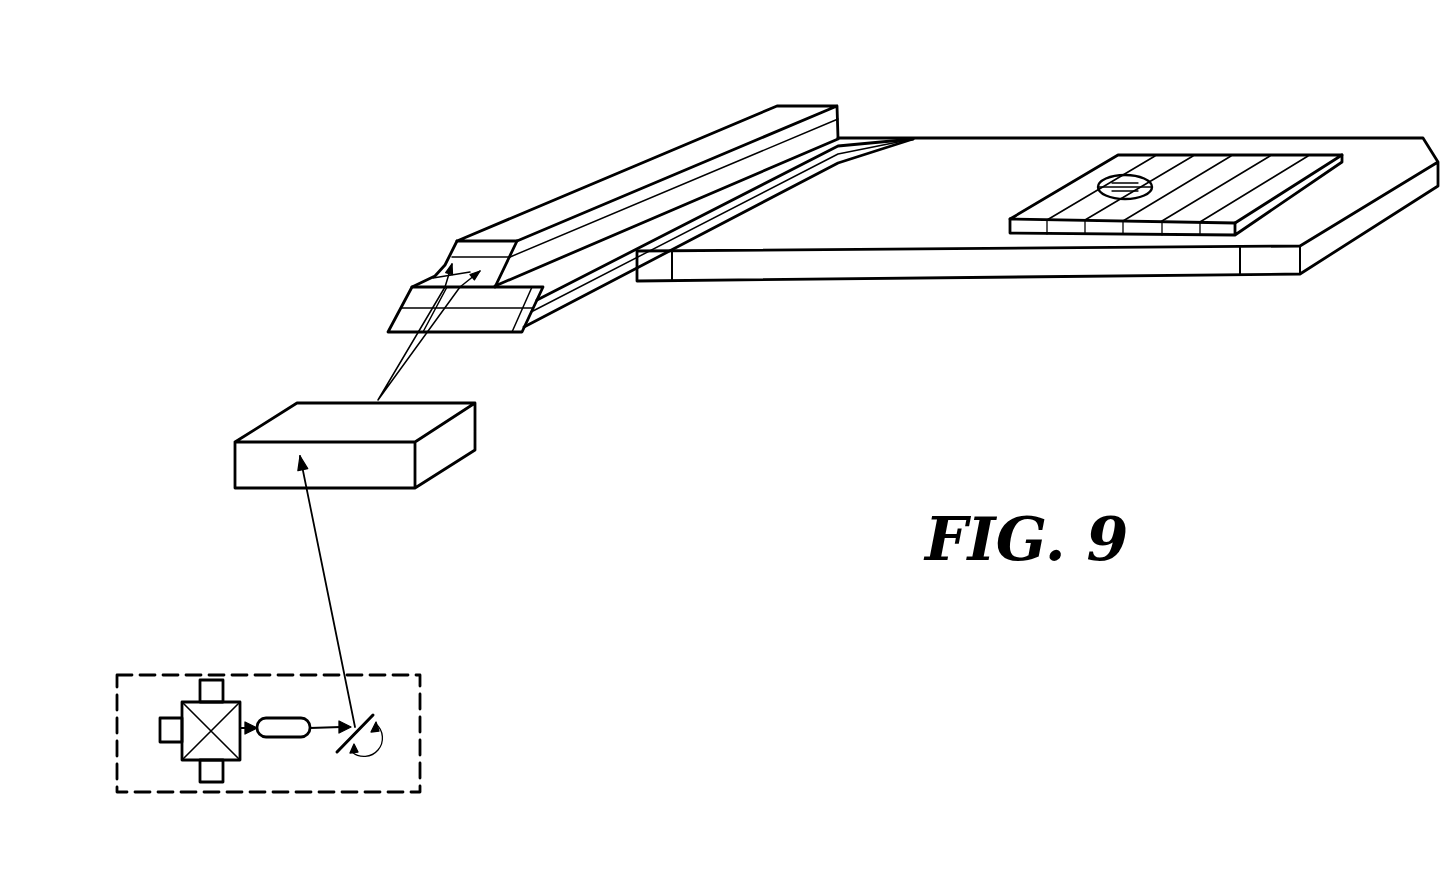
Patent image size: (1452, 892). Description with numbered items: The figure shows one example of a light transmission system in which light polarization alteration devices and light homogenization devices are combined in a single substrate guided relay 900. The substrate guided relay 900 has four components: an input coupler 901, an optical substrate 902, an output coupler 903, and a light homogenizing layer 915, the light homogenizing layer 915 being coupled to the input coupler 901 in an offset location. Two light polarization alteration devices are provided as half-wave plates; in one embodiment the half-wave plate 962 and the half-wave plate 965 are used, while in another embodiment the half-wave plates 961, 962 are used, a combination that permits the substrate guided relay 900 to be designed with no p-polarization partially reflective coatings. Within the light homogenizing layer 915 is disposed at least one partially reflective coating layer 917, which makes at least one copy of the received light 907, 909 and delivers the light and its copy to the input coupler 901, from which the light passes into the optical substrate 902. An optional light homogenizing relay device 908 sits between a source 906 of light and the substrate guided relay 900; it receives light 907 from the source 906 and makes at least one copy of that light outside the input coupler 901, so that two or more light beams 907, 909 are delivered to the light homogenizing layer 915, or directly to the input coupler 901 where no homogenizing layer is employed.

The substrate guided relay 900 is at (343, 195).
The input coupler 901 is at (673, 253).
The optical substrate 902 is at (766, 268).
The output coupler 903 is at (1188, 150).
The source 906 is at (437, 695).
The light 907 is at (425, 348).
The light homogenizing relay device 908 is at (450, 450).
The light beam copy 909 is at (425, 340).
The light homogenizing layer 915 is at (713, 130).
The partially reflective coating layer 917 is at (590, 222).
The half-wave plate 961 is at (840, 137).
The half-wave plate 962 is at (865, 163).
The half-wave plate 965 is at (1122, 177).